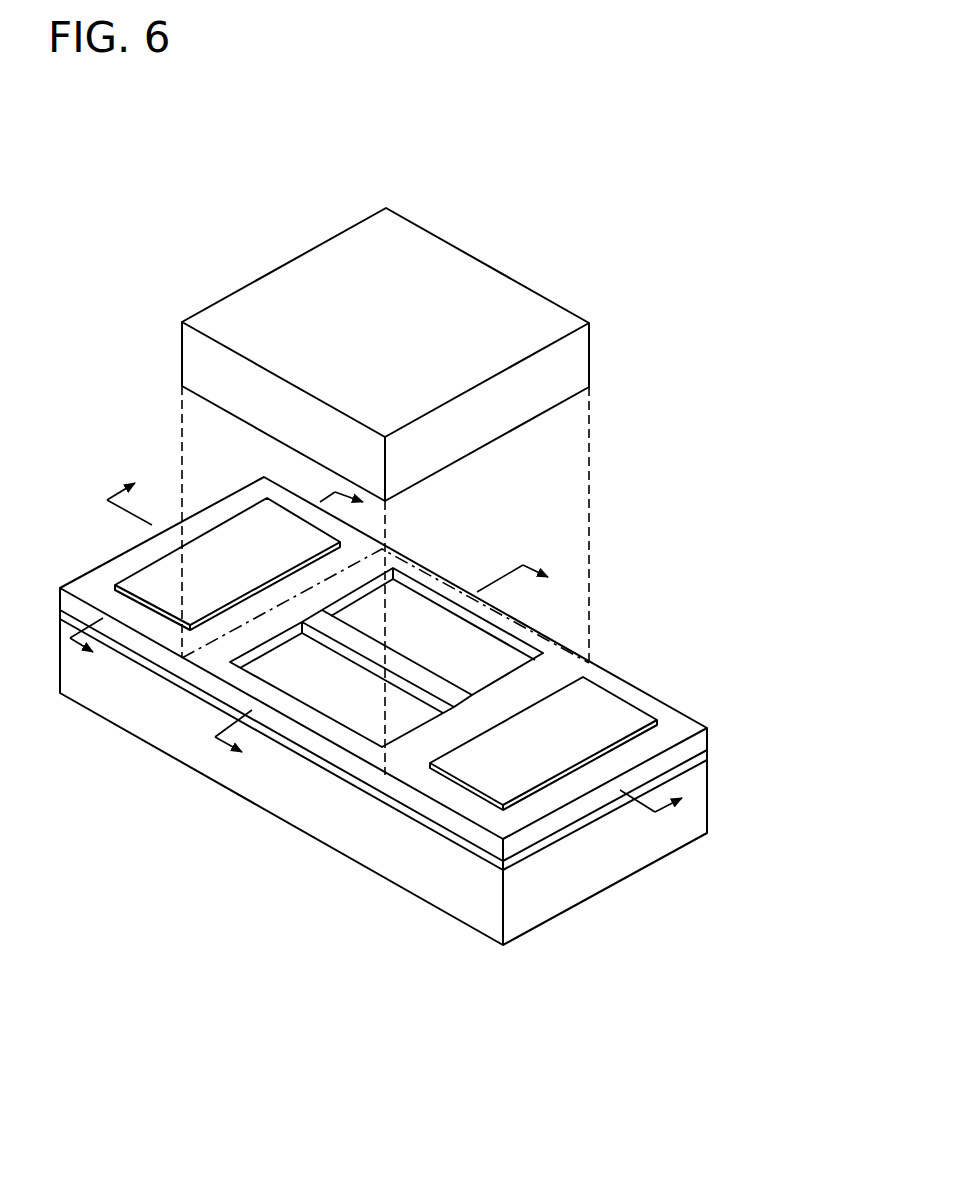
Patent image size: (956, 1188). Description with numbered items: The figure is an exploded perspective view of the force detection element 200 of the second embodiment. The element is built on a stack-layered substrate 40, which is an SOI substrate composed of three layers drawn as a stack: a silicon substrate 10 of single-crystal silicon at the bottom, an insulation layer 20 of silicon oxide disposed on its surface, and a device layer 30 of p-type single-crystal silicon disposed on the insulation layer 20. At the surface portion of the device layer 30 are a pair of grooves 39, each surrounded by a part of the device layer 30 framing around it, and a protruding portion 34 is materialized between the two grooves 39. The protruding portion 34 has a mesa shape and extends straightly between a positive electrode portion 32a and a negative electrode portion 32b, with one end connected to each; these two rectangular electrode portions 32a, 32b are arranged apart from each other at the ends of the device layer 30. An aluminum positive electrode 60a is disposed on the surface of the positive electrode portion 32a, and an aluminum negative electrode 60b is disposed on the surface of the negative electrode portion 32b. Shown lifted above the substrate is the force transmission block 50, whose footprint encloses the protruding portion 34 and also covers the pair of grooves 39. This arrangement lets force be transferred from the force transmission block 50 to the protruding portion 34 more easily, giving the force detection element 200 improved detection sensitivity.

The force detection element 200 is at (651, 102).
The force transmission block 50 is at (574, 350).
The grooves 39 is at (282, 662).
The protruding portion 34 is at (397, 663).
The positive electrode 60a is at (140, 584).
The negative electrode 60b is at (600, 702).
The positive electrode portion 32a is at (112, 598).
The negative electrode portion 32b is at (663, 740).
The device layer 30 is at (709, 729).
The insulation layer 20 is at (709, 753).
The silicon substrate 10 is at (777, 706).
The stack-layered substrate 40 is at (443, 711).